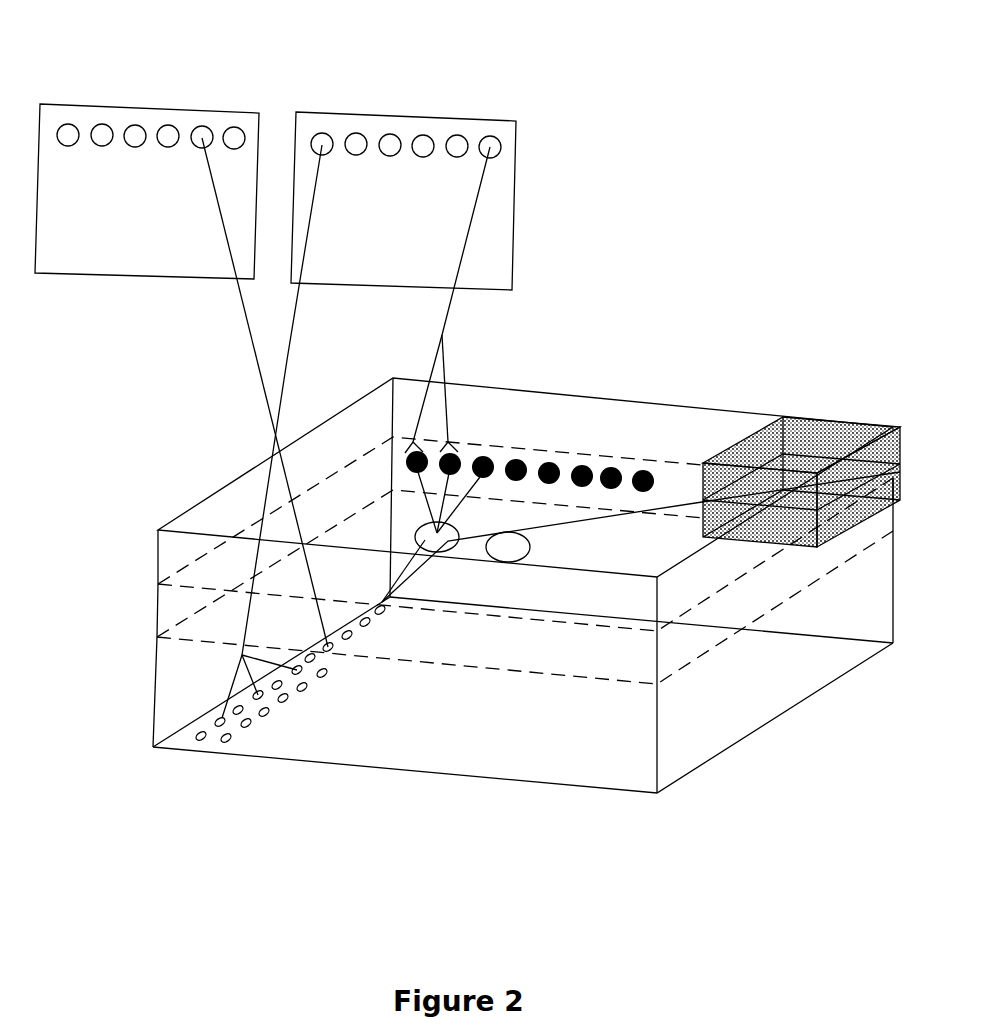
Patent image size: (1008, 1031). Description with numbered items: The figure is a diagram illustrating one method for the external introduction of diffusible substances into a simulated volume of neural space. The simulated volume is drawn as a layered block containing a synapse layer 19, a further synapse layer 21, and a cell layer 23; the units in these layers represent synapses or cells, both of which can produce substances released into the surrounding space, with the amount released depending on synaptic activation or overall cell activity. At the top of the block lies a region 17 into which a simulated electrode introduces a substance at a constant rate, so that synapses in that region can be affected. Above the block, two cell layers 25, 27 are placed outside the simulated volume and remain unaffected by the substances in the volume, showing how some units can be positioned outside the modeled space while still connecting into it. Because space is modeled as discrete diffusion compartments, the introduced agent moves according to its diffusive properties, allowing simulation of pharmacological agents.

The region of substance introduction 17 is at (818, 437).
The synapse layer 19 is at (708, 598).
The synapse layer 21 is at (692, 770).
The cell layer 23 is at (470, 668).
The cell layer outside of the simulated volume 25 is at (158, 107).
The cell layer outside of the simulated volume 27 is at (398, 113).